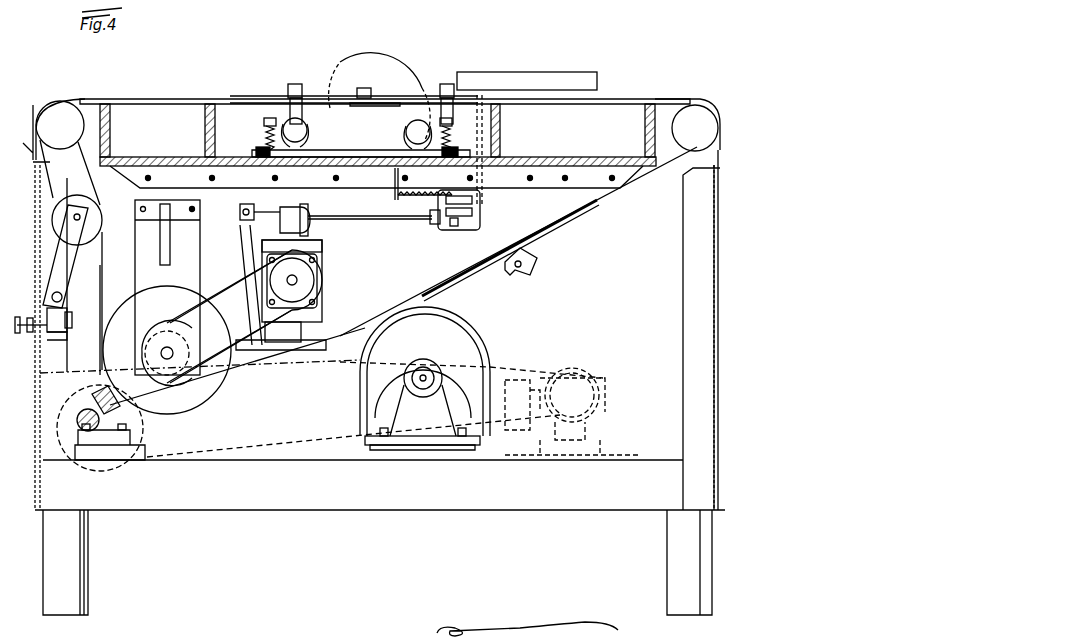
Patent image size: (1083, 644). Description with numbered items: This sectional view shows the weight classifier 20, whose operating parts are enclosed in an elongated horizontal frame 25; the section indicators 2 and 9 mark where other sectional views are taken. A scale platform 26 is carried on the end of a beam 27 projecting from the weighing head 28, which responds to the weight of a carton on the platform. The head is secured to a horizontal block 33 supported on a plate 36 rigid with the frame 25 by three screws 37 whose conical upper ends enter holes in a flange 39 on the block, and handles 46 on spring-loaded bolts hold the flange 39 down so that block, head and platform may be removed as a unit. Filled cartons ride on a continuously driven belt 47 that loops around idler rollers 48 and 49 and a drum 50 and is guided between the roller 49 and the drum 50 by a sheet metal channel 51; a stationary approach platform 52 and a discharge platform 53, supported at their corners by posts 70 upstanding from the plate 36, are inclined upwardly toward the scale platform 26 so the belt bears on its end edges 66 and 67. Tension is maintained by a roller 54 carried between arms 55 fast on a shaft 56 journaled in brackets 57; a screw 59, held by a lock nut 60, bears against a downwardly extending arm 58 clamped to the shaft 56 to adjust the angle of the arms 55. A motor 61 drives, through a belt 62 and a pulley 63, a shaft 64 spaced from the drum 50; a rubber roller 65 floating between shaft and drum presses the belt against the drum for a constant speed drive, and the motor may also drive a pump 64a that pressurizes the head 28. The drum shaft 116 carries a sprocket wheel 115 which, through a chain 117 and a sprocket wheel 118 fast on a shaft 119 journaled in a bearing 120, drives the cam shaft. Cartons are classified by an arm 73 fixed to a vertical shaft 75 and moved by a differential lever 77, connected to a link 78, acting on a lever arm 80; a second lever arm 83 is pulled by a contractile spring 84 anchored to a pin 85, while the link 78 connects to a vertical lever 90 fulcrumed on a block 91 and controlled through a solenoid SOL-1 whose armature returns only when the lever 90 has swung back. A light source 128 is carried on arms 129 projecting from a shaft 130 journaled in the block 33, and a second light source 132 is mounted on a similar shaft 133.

The weight classifier 20 is at (683, 89).
The frame 25 is at (714, 238).
The scale platform 26 is at (400, 97).
The beam 27 is at (370, 88).
The weighing head 28 is at (387, 66).
The block 33 is at (320, 112).
The plate 36 is at (627, 160).
The screws 37 is at (262, 174).
The flange 39 is at (258, 150).
The handle 46 is at (264, 122).
The belt 47 is at (237, 99).
The idler roller 48 is at (70, 112).
The idler roller 49 is at (717, 127).
The drum 50 is at (200, 405).
The channel 51 is at (562, 220).
The approach platform 52 is at (175, 99).
The discharge platform 53 is at (636, 99).
The tensioning roller 54 is at (95, 210).
The arms 55 is at (82, 252).
The shaft 56 is at (62, 296).
The brackets 57 is at (62, 314).
The arm 58 is at (60, 337).
The screw 59 is at (25, 318).
The lock nut 60 is at (33, 337).
The motor 61 is at (466, 352).
The belt 62 is at (362, 432).
The pulley 63 is at (137, 462).
The shaft 64 is at (130, 424).
The pump 64a is at (595, 410).
The rubber roller 65 is at (112, 402).
The end edge 66 is at (225, 107).
The end edge 67 is at (448, 102).
The posts 70 is at (500, 131).
The arm 73 is at (579, 72).
The vertical shaft 75 is at (479, 150).
The differential lever 77 is at (480, 212).
The link 78 is at (374, 225).
The lever arm 80 is at (478, 200).
The second lever arm 83 is at (497, 180).
The contractile spring 84 is at (406, 203).
The pin 85 is at (394, 182).
The lever 90 is at (246, 237).
The block 91 is at (282, 342).
The sprocket wheel 115 is at (185, 320).
The drum shaft 116 is at (167, 351).
The chain 117 is at (180, 300).
The sprocket wheel 118 is at (312, 286).
The shaft 119 is at (298, 280).
The bearing 120 is at (318, 262).
The light source 128 is at (290, 84).
The arms 129 is at (292, 106).
The shaft 130 is at (306, 132).
The light source 132 is at (446, 84).
The shaft 133 is at (412, 131).
The solenoid SOL-1 is at (316, 228).
The section line 2 is at (24, 150).
The section line 9 is at (288, 188).